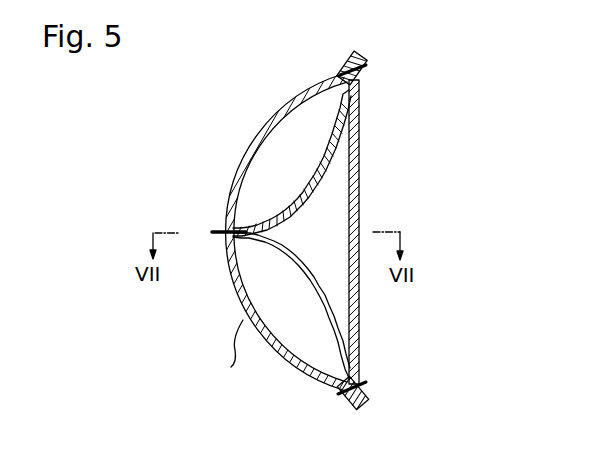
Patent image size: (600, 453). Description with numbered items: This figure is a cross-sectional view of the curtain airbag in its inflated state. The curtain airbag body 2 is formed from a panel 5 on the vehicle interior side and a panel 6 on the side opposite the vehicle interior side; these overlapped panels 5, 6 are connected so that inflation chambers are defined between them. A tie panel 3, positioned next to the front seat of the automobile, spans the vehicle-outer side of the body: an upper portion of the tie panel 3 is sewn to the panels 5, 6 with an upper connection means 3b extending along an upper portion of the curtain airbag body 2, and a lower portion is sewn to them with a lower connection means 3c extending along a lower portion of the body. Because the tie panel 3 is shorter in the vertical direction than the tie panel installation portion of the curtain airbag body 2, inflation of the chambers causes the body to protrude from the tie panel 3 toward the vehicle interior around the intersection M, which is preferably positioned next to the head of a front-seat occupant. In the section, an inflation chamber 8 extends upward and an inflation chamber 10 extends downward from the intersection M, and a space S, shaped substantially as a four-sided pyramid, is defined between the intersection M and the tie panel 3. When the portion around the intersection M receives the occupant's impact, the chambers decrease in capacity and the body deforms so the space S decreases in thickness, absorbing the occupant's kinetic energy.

The curtain airbag body 2 is at (246, 112).
The tie panel 3 is at (362, 179).
The upper connection means 3b is at (343, 71).
The lower connection means 3c is at (365, 382).
The panel 5 is at (234, 354).
The panel 6 is at (318, 188).
The inflation chamber 8 is at (290, 172).
The inflation chamber 10 is at (288, 312).
The space S is at (323, 249).
The intersection M is at (210, 230).